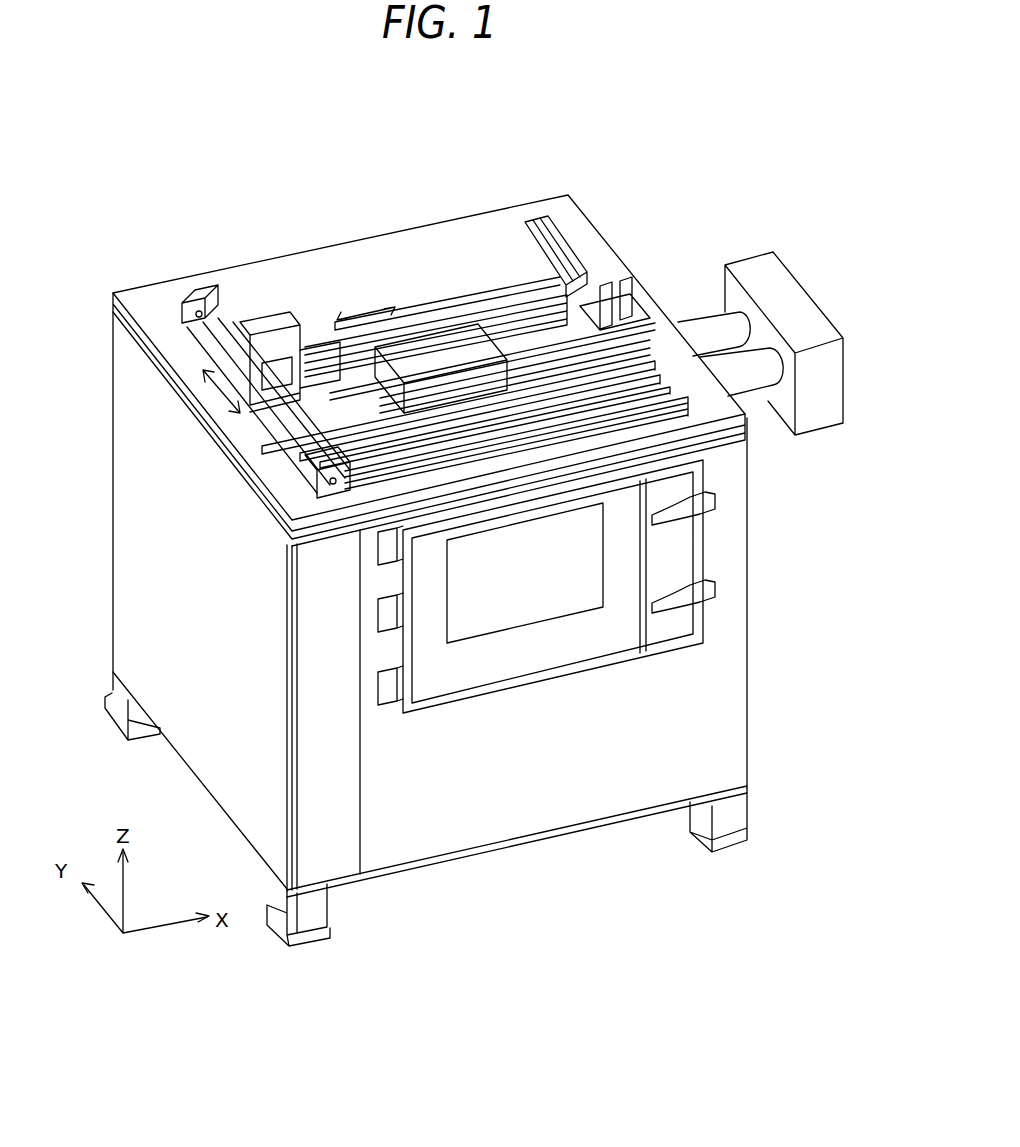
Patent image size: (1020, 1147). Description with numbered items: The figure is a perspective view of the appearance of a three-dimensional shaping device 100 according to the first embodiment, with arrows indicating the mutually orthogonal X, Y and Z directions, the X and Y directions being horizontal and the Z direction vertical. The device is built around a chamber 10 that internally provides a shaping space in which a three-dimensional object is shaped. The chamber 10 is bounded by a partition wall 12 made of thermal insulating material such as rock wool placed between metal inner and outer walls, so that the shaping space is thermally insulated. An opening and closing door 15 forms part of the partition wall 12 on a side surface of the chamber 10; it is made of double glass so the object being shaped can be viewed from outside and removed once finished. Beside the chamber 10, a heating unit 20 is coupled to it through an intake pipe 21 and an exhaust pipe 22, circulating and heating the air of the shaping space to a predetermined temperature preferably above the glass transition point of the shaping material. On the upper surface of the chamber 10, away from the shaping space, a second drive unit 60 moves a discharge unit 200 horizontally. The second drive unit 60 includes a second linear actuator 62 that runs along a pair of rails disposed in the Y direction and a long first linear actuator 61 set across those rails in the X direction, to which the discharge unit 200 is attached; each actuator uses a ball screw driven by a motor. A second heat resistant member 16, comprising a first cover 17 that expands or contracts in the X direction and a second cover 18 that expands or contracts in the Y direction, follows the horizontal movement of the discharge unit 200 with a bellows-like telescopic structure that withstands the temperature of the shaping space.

The three-dimensional shaping device 100 is at (155, 128).
The chamber 10 is at (163, 272).
The partition wall 12 is at (182, 603).
The opening and closing door 15 is at (543, 607).
The second heat resistant member 16 is at (63, 408).
The first cover 17 is at (340, 414).
The second cover 18 is at (345, 452).
The heating unit 20 is at (752, 262).
The intake pipe 21 is at (705, 318).
The exhaust pipe 22 is at (750, 395).
The second drive unit 60 is at (260, 203).
The first linear actuator 61 is at (335, 328).
The second linear actuator 62 is at (212, 287).
The discharge unit 200 is at (413, 320).